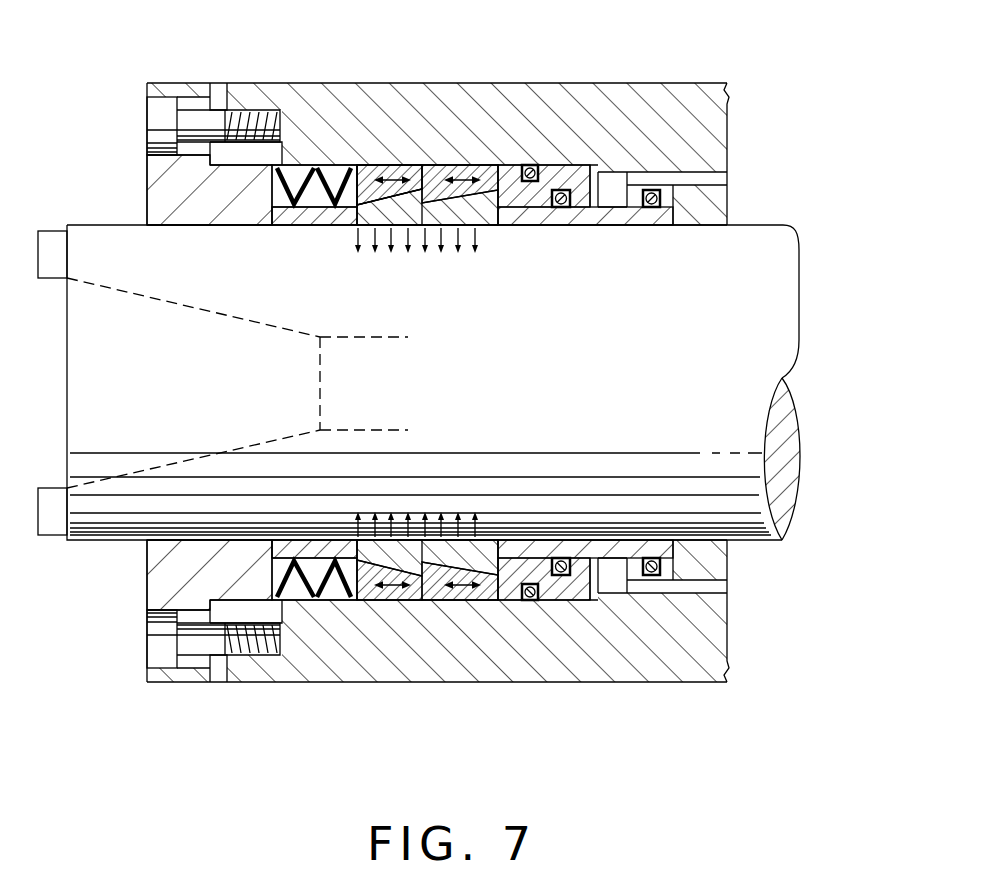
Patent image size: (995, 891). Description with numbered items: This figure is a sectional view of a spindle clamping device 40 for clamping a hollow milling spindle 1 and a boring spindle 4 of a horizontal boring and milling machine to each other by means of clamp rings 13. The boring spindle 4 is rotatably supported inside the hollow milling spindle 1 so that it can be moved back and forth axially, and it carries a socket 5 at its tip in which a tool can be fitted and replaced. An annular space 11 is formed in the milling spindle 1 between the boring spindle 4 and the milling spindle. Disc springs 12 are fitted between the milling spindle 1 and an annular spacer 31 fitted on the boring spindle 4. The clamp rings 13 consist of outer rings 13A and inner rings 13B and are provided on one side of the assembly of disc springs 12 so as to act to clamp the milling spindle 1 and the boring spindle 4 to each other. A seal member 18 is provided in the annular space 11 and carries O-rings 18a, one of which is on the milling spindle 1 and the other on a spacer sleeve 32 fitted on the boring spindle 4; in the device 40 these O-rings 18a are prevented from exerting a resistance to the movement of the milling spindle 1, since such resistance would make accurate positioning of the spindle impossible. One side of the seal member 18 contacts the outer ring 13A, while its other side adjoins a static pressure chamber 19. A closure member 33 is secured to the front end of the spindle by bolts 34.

The milling spindle 1 is at (318, 95).
The boring spindle 4 is at (83, 390).
The socket 5 is at (108, 290).
The annular space 11 is at (371, 167).
The disc springs 12 is at (325, 163).
The clamp rings 13 is at (458, 160).
The outer rings 13A is at (483, 165).
The inner rings 13B is at (483, 215).
The seal member 18 is at (573, 170).
The O-rings 18a is at (533, 166).
The static pressure chamber 19 is at (615, 183).
The annular spacer 31 is at (318, 217).
The spacer sleeve 32 is at (585, 232).
The closure member 33 is at (157, 191).
The bolts 34 is at (153, 115).
The device 40 is at (417, 262).